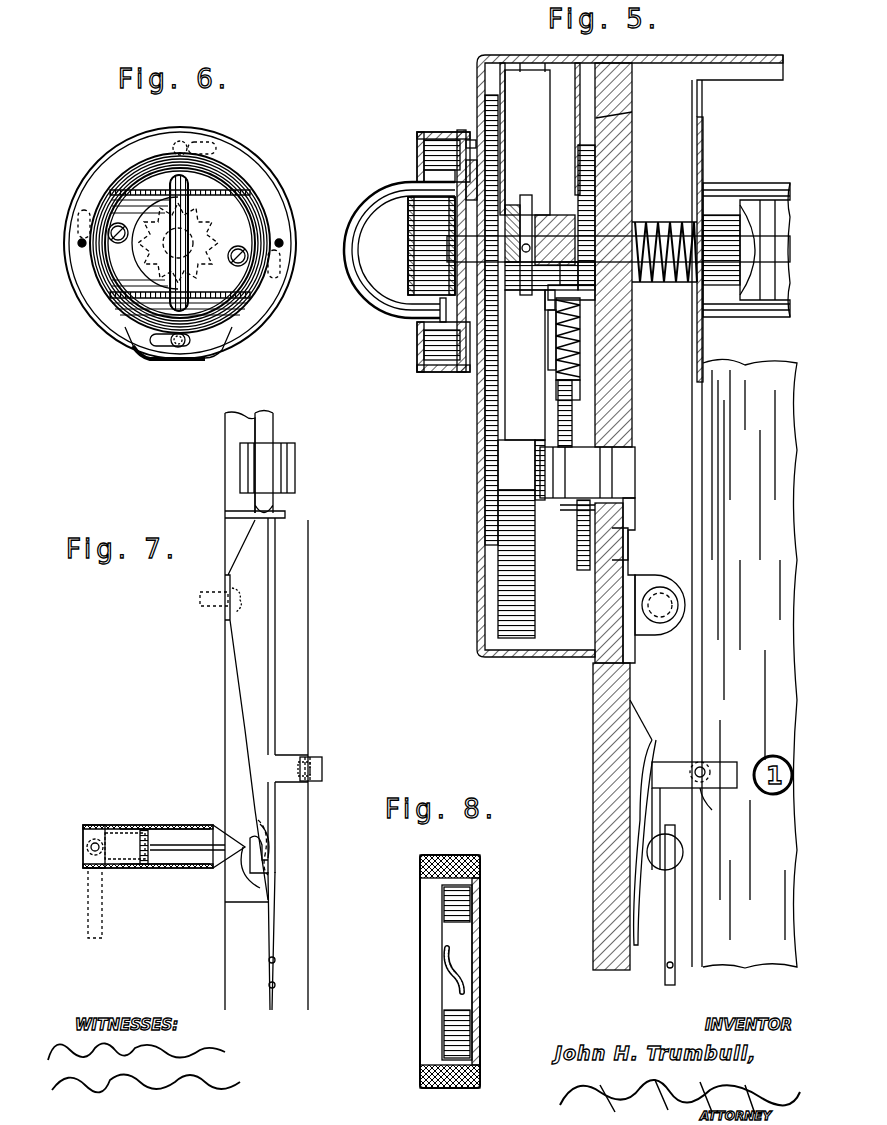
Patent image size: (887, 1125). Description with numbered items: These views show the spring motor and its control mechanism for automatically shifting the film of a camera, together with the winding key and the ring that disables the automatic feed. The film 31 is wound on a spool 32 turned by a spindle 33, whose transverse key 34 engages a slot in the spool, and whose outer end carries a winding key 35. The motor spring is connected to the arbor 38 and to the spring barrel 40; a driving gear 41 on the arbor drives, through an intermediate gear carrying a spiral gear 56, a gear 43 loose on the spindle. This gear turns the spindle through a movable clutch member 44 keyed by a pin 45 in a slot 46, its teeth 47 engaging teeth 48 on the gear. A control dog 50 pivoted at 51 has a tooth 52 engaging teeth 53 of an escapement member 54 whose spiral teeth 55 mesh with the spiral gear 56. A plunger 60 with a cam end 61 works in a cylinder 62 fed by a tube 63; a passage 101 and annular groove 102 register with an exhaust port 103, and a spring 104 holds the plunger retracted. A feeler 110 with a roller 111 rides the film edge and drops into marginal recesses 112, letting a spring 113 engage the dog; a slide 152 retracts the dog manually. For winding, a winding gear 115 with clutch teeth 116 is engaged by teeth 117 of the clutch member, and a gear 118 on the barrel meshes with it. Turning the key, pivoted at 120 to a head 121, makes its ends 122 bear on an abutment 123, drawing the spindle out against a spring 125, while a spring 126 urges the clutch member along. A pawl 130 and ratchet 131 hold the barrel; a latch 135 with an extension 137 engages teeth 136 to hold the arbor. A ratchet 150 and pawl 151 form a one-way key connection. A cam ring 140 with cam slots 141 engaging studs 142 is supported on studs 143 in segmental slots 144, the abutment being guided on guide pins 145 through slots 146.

In FIG. 5, the film 31 is at (744, 524).
In FIG. 7, the film 31 is at (310, 684).
In FIG. 5, the spool 32 is at (782, 244).
In FIG. 5, the spindle 33 is at (610, 243).
In FIG. 5, the transverse key 34 is at (716, 228).
In FIG. 5, the winding key 35 is at (368, 212).
In FIG. 6, the winding key 35 is at (190, 215).
In FIG. 5, the arbor 38 is at (485, 462).
In FIG. 5, the spring barrel 40 is at (526, 600).
In FIG. 5, the driving gear 41 is at (577, 562).
In FIG. 5, the gear 43 is at (604, 178).
In FIG. 5, the movable clutch member 44 is at (530, 300).
In FIG. 5, the pin 45 is at (518, 292).
In FIG. 5, the slot 46 is at (560, 230).
In FIG. 5, the teeth 47 is at (532, 200).
In FIG. 5, the teeth 48 is at (605, 300).
In FIG. 5, the control dog 50 is at (636, 522).
In FIG. 7, the control dog 50 is at (268, 638).
In FIG. 5, the pivot 51 is at (662, 615).
In FIG. 5, the tooth 52 is at (618, 462).
In FIG. 5, the teeth 53 is at (578, 470).
In FIG. 7, the teeth 53 is at (287, 472).
In FIG. 5, the escapement member 54 is at (585, 422).
In FIG. 7, the escapement member 54 is at (270, 430).
In FIG. 5, the spiral teeth 55 is at (582, 358).
In FIG. 5, the spiral gear 56 is at (598, 266).
In FIG. 7, the plunger 60 is at (162, 838).
In FIG. 5, the cam end 61 is at (684, 855).
In FIG. 7, the cam end 61 is at (250, 862).
In FIG. 7, the cylinder 62 is at (94, 826).
In FIG. 7, the tube 63 is at (102, 922).
In FIG. 7, the longitudinal passage 101 is at (122, 866).
In FIG. 7, the annular groove 102 is at (146, 866).
In FIG. 7, the exhaust port 103 is at (178, 828).
In FIG. 5, the spring 104 is at (676, 886).
In FIG. 7, the spring 104 is at (268, 908).
In FIG. 5, the feeler 110 is at (714, 764).
In FIG. 7, the feeler 110 is at (318, 780).
In FIG. 5, the roller 111 is at (694, 766).
In FIG. 7, the roller 111 is at (312, 760).
In FIG. 5, the marginal recesses 112 is at (710, 800).
In FIG. 5, the spring 113 is at (640, 820).
In FIG. 5, the winding gear 115 is at (479, 130).
In FIG. 5, the clutch teeth 116 is at (520, 214).
In FIG. 5, the teeth 117 is at (508, 214).
In FIG. 5, the gear 118 is at (490, 522).
In FIG. 5, the pivot 120 is at (418, 198).
In FIG. 5, the head 121 is at (428, 165).
In FIG. 6, the head 121 is at (222, 278).
In FIG. 5, the ends 122 is at (450, 160).
In FIG. 5, the abutment 123 is at (417, 340).
In FIG. 5, the spring 125 is at (665, 282).
In FIG. 5, the spring 126 is at (608, 118).
In FIG. 5, the pawl 130 is at (582, 400).
In FIG. 5, the ratchet 131 is at (538, 486).
In FIG. 5, the latch 135 is at (548, 300).
In FIG. 5, the teeth 136 is at (552, 320).
In FIG. 5, the extension 137 is at (577, 200).
In FIG. 5, the cam ring 140 is at (440, 372).
In FIG. 6, the cam ring 140 is at (96, 316).
In FIG. 8, the cam ring 140 is at (478, 860).
In FIG. 8, the cam slots 141 is at (458, 978).
In FIG. 5, the studs 142 is at (425, 355).
In FIG. 5, the studs 143 is at (448, 350).
In FIG. 6, the studs 143 is at (185, 146).
In FIG. 6, the segmental slots 144 is at (155, 342).
In FIG. 6, the guide pins 145 is at (80, 242).
In FIG. 6, the slots 146 is at (283, 270).
In FIG. 5, the ratchet 150 is at (410, 250).
In FIG. 6, the ratchet 150 is at (230, 212).
In FIG. 6, the pawl 151 is at (225, 228).
In FIG. 5, the slide 152 is at (630, 560).